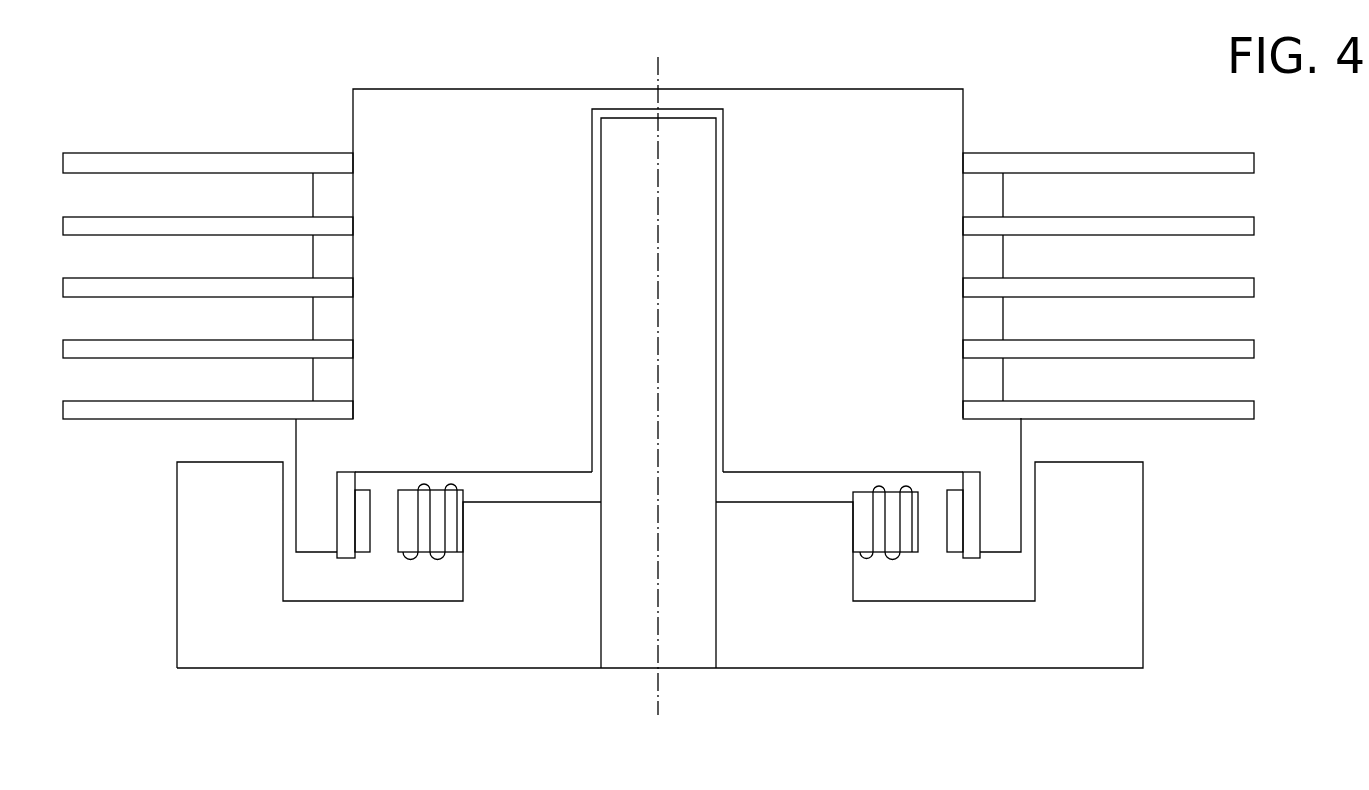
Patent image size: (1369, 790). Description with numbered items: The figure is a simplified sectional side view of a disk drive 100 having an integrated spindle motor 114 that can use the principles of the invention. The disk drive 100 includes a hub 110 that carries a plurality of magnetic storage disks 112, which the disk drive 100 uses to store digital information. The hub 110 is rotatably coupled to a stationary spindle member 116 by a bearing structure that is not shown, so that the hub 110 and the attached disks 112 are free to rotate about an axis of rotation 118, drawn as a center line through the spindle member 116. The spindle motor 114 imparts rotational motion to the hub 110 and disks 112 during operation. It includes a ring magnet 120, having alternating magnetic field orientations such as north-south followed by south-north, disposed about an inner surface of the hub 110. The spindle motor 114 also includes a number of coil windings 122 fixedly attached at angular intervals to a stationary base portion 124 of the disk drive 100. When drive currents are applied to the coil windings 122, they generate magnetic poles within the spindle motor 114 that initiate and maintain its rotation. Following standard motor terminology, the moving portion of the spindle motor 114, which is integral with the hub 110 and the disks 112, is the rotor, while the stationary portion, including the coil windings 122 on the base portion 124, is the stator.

The disk drive 100 is at (1063, 80).
The hub 110 is at (812, 89).
The magnetic storage disks 112 is at (1145, 153).
The spindle motor 114 is at (1173, 463).
The stationary spindle member 116 is at (628, 126).
The axis of rotation 118 is at (658, 686).
The ring magnet 120 is at (363, 545).
The coil windings 122 is at (420, 530).
The stationary base portion 124 is at (250, 549).